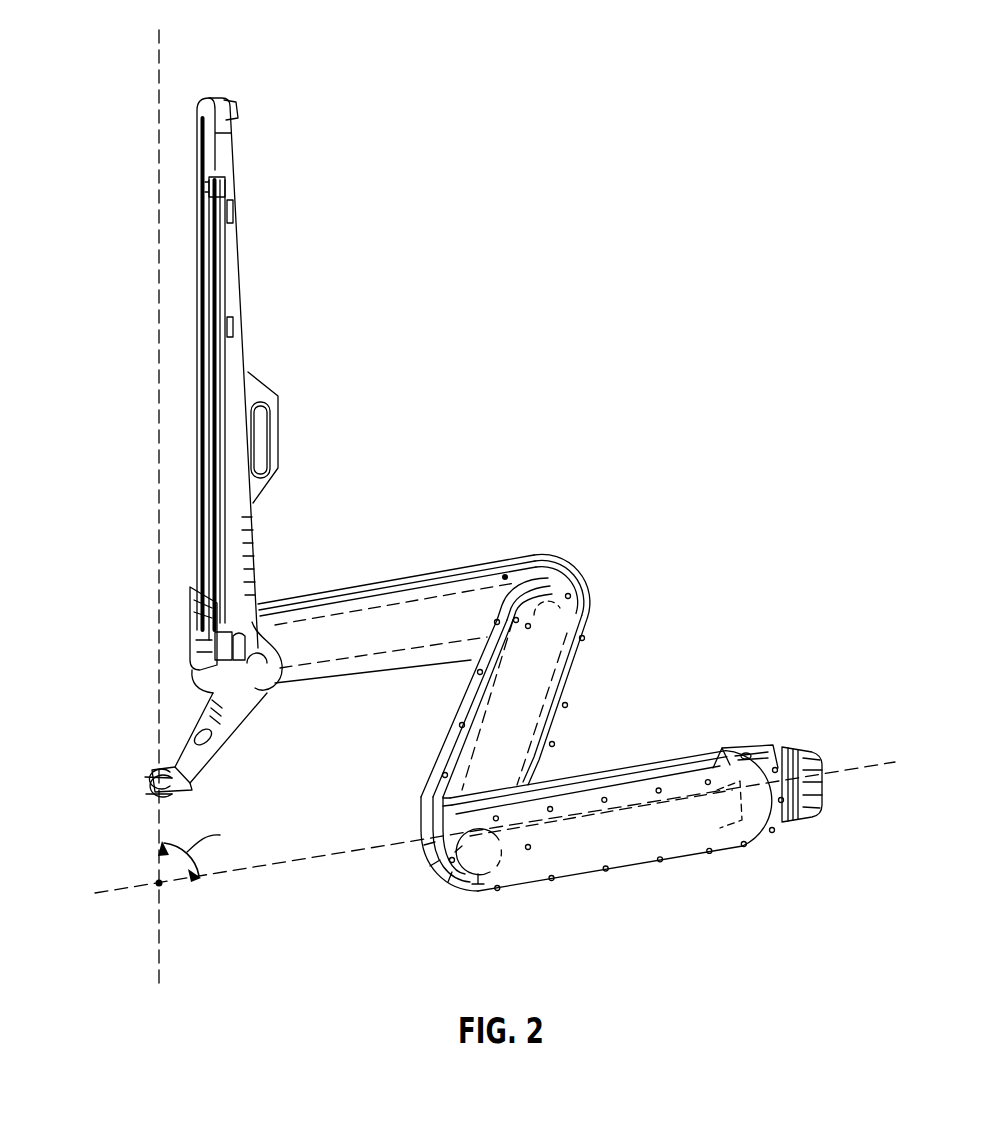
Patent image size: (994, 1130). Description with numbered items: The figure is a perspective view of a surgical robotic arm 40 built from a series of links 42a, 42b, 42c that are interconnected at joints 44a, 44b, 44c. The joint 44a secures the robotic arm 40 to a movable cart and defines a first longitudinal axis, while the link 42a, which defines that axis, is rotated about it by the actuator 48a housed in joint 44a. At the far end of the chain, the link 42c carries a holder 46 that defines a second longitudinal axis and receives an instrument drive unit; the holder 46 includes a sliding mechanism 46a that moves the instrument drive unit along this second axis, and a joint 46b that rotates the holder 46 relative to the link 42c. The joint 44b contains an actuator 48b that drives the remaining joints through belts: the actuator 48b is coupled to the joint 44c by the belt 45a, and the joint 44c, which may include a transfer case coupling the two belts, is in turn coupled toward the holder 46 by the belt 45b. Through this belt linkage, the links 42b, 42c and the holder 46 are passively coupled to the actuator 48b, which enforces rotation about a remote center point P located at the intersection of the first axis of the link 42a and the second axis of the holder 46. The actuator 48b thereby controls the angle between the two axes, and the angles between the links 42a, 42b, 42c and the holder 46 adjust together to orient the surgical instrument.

The robotic arm 40 is at (272, 42).
The holder 46 is at (228, 152).
The sliding mechanism 46a is at (198, 303).
The joint 46b is at (253, 635).
The link 42c is at (352, 592).
The belt 45b is at (468, 587).
The joint 44c is at (568, 615).
The link 42b is at (510, 747).
The belt 45a is at (555, 667).
The link 42a is at (630, 843).
The joint 44b is at (480, 873).
The actuator 48b is at (443, 850).
The joint 44a is at (810, 812).
The actuator 48a is at (793, 748).
The remote center point P is at (158, 884).